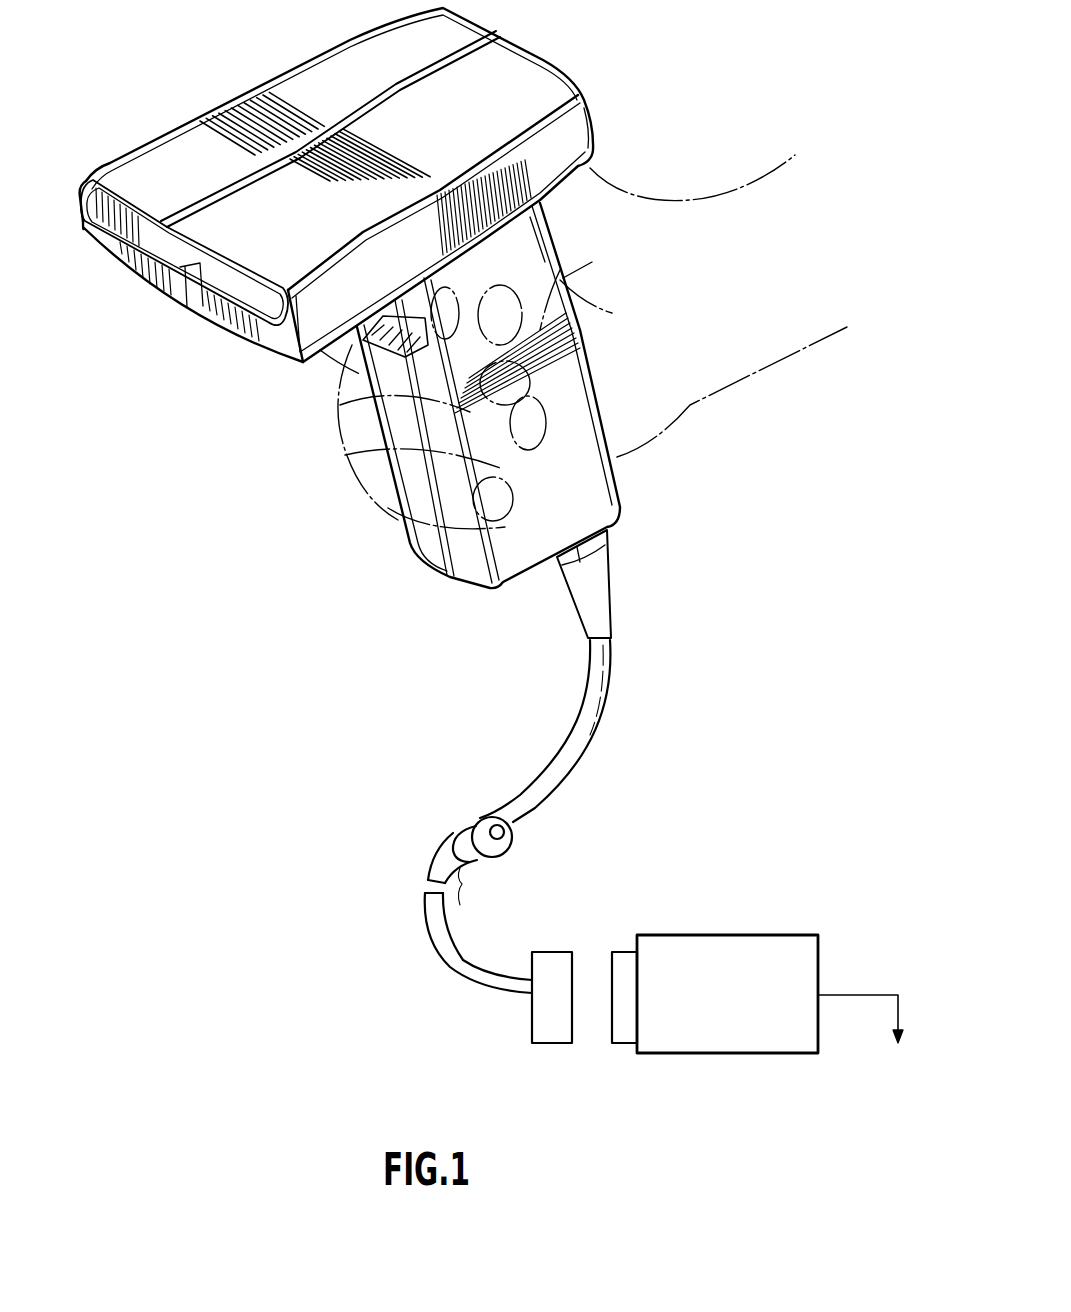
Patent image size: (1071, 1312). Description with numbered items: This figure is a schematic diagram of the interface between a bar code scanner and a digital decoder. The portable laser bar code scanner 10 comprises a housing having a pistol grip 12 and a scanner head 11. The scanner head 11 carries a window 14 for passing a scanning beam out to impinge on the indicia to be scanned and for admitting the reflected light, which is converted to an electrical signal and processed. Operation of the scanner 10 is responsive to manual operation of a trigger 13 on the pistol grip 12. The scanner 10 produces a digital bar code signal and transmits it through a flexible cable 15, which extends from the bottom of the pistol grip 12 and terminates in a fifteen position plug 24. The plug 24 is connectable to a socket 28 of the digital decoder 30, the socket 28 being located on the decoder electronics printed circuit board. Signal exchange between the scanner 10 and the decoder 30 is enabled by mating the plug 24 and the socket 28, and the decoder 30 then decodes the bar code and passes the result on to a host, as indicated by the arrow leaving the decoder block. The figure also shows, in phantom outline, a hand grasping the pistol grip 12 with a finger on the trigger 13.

The laser bar code scanner 10 is at (650, 95).
The scanner head 11 is at (553, 46).
The pistol grip 12 is at (636, 490).
The trigger 13 is at (363, 352).
The window 14 is at (240, 278).
The flexible cable 15 is at (607, 597).
The fifteen position plug 24 is at (556, 1043).
The socket 28 is at (628, 1043).
The digital decoder 30 is at (735, 1053).